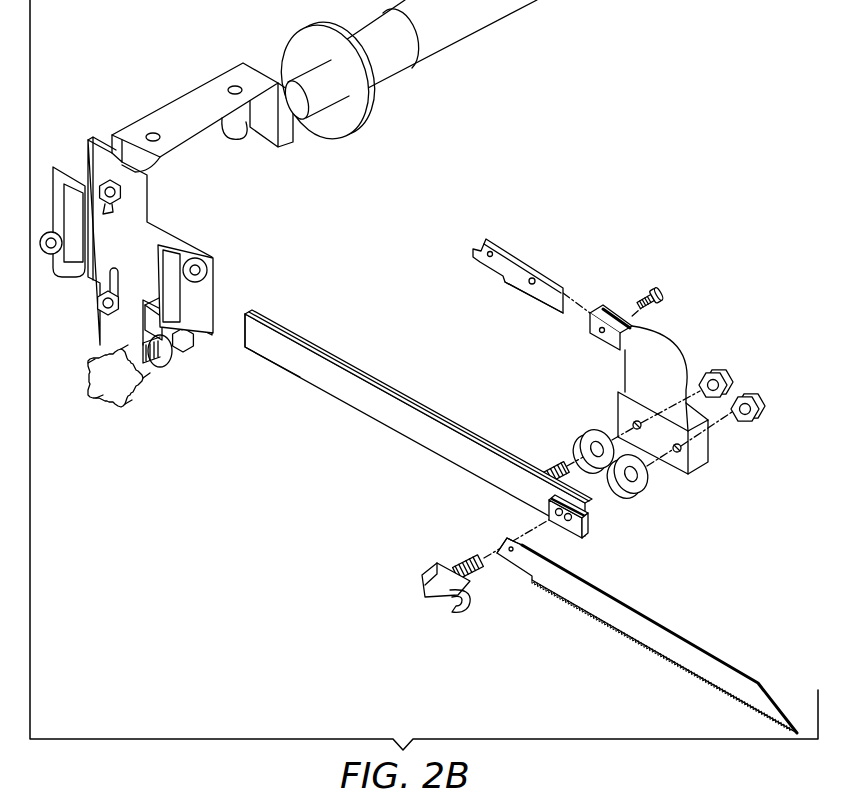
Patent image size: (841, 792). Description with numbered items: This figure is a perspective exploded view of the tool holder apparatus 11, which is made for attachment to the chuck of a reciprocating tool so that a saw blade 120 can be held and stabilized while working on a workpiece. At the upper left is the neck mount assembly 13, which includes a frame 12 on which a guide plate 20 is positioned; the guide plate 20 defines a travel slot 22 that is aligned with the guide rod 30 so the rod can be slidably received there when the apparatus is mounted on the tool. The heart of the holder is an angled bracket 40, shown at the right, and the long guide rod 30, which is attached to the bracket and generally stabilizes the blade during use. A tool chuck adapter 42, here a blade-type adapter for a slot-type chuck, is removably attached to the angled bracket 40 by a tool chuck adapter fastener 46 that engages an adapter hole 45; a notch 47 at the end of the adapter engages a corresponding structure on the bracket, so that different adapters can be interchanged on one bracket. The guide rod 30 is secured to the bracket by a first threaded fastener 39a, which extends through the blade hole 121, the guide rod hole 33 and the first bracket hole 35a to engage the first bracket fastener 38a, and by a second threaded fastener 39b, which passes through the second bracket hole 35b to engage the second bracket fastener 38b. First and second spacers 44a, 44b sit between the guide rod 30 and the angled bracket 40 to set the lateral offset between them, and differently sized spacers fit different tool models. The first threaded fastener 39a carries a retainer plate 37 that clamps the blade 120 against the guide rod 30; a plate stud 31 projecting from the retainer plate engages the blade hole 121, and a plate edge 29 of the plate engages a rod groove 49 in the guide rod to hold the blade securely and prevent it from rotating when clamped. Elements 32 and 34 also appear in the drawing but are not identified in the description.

The tool holder apparatus 11 is at (609, 221).
The frame 12 is at (182, 108).
The neck mount assembly 13 is at (375, 191).
The guide plate 20 is at (165, 220).
The travel slot 22 is at (95, 252).
The plate edge 29 is at (416, 590).
The guide rod 30 is at (418, 423).
The plate stud 31 is at (455, 597).
The slider block 32 is at (539, 524).
The guide rod hole 33 is at (548, 517).
The rail 34 is at (257, 365).
The first bracket hole 35a is at (678, 452).
The second bracket hole 35b is at (633, 424).
The retainer plate 37 is at (425, 579).
The first bracket fastener 38a is at (757, 405).
The second bracket fastener 38b is at (724, 368).
The first threaded fastener 39a is at (478, 582).
The second threaded fastener 39b is at (562, 458).
The angled bracket 40 is at (669, 407).
The tool chuck adapter 42 is at (527, 282).
The first spacer 44a is at (647, 490).
The second spacer 44b is at (592, 432).
The adapter hole 45 is at (537, 280).
The tool chuck adapter fastener 46 is at (663, 292).
The notch 47 is at (507, 299).
The rod groove 49 is at (588, 516).
The saw blade 120 is at (647, 635).
The blade hole 121 is at (524, 545).